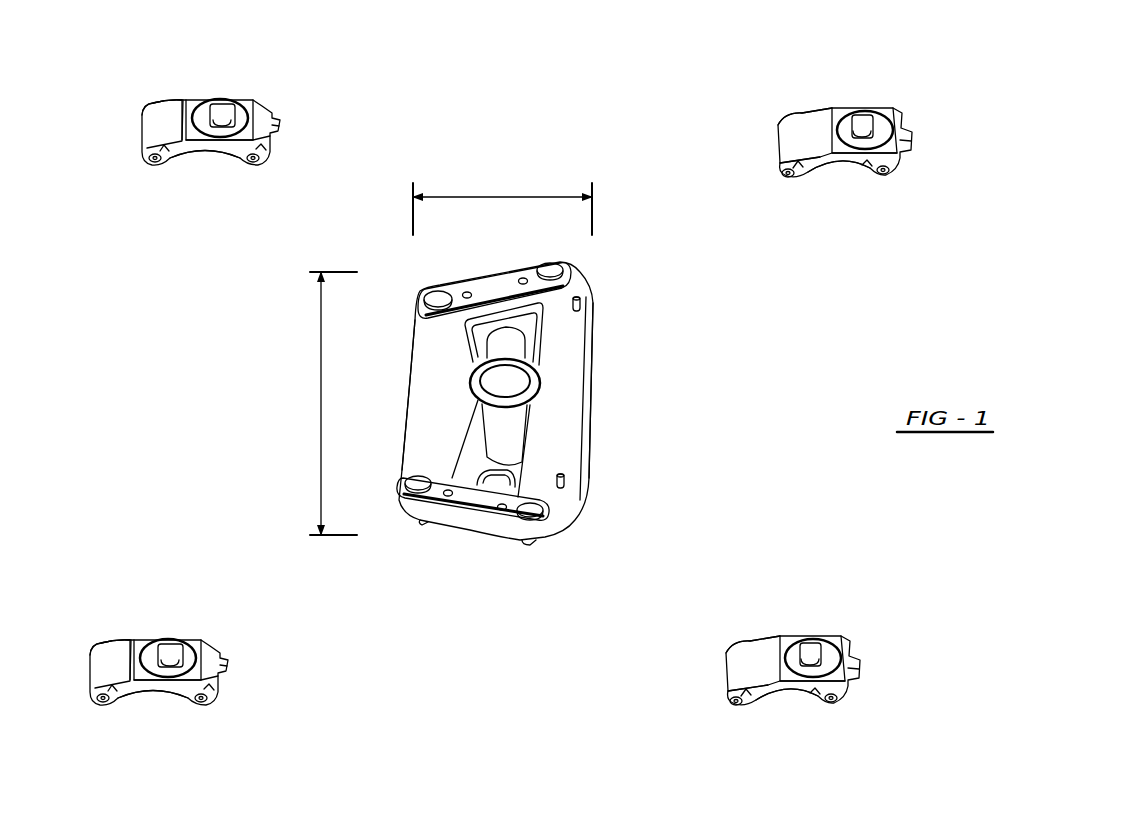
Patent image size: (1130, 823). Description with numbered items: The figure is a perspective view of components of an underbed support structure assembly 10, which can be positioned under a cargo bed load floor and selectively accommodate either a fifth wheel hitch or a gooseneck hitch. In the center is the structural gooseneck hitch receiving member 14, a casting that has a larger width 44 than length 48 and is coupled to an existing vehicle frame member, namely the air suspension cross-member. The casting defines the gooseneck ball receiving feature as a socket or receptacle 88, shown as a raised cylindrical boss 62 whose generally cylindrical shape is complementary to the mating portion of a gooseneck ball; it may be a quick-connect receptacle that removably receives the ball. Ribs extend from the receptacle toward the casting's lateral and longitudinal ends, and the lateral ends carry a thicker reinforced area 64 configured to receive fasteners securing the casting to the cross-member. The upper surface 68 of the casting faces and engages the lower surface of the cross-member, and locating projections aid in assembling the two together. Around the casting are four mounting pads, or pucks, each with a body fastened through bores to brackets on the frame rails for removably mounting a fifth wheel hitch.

The underbed support structure assembly 10 is at (1036, 68).
The structural gooseneck hitch receiving member 14 is at (657, 297).
The width 44 is at (324, 403).
The length 48 is at (502, 203).
The cylindrical boss 62 is at (540, 383).
The reinforced area 64 is at (476, 530).
The upper surface 68 is at (553, 433).
The receptacle 88 is at (497, 386).